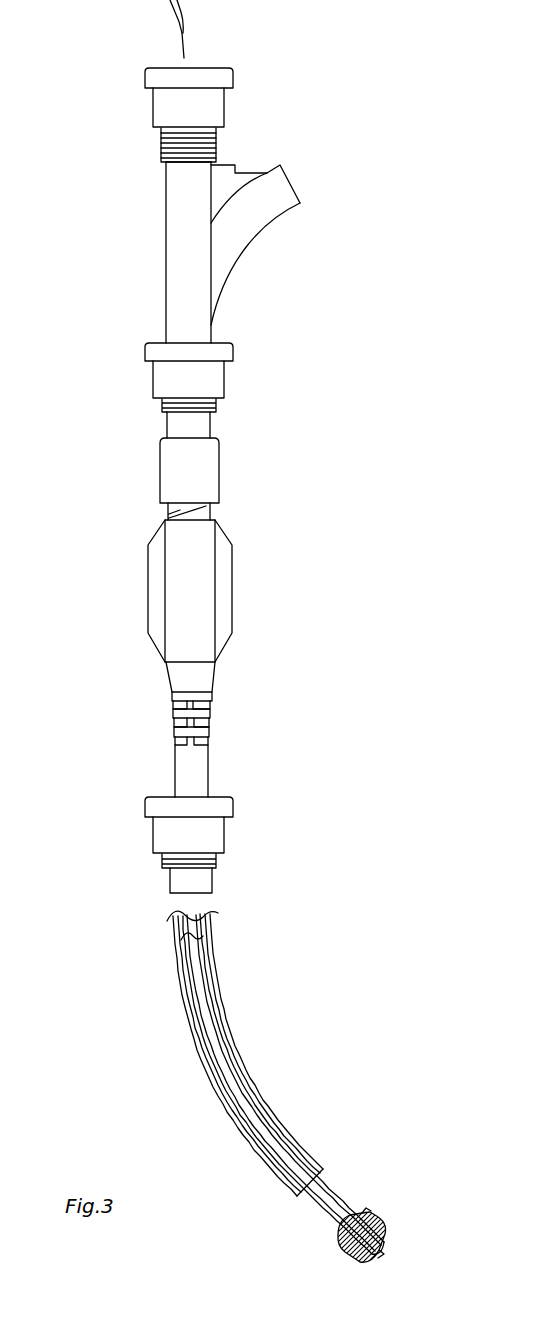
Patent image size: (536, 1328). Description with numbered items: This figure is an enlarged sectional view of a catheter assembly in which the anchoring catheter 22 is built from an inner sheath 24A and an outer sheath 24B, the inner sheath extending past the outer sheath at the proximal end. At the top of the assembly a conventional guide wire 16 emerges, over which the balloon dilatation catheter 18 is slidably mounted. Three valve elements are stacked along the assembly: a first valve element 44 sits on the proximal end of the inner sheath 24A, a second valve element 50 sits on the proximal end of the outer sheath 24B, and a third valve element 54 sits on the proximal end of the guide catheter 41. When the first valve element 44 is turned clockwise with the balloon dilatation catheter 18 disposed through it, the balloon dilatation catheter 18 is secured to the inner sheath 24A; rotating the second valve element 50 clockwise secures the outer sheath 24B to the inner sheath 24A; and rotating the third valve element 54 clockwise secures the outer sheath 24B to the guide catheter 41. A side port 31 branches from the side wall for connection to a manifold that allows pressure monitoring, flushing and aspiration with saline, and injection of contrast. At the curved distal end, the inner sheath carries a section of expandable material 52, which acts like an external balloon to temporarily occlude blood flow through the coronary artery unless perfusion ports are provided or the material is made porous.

The balloon dilatation catheter 18 is at (176, 10).
The guide wire 16 is at (186, 43).
The valve element 44 is at (225, 106).
The side port 31 is at (260, 232).
The second valve element 50 is at (225, 380).
The third valve element 54 is at (225, 836).
The guide catheter 41 is at (181, 960).
The anchoring catheter 22 is at (310, 1216).
The section of expandable material 52 is at (341, 1251).
The inner sheath 24A is at (381, 1247).
The outer sheath 24B is at (377, 1222).